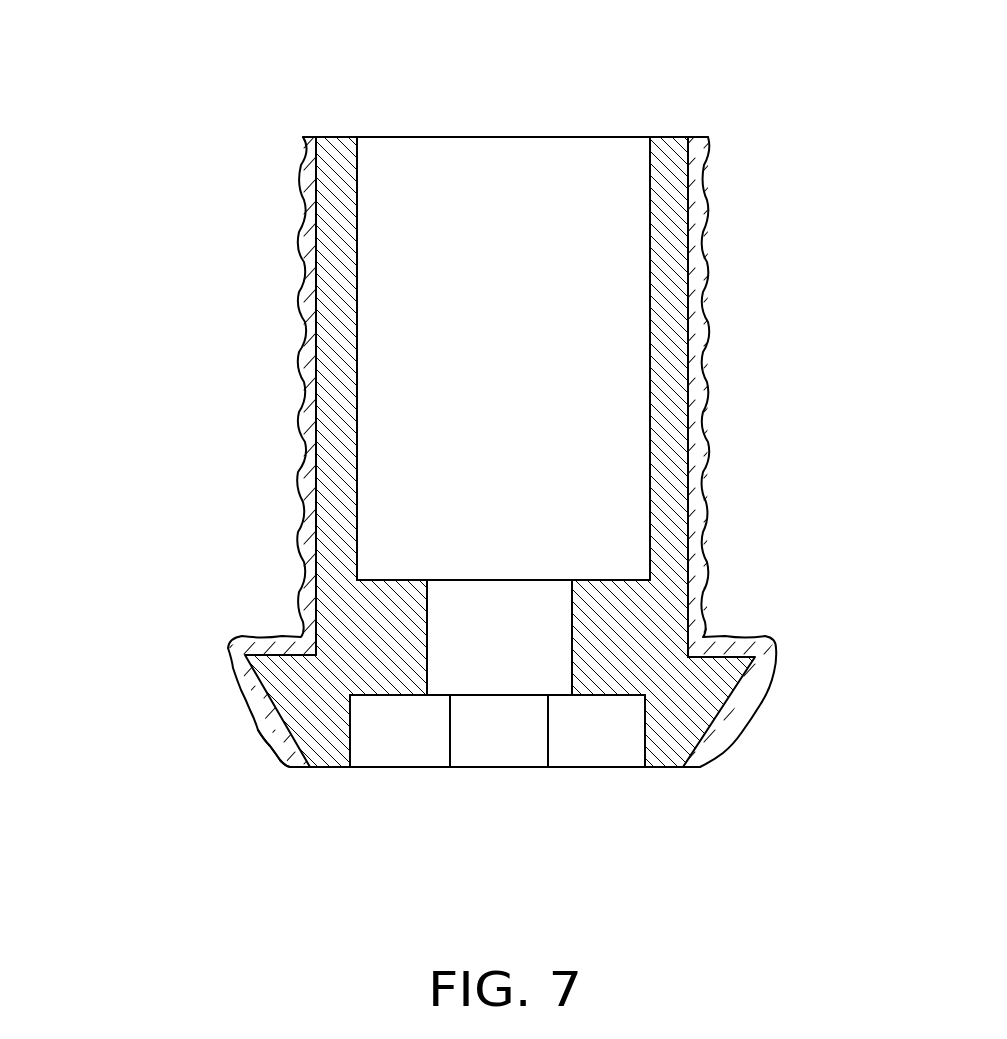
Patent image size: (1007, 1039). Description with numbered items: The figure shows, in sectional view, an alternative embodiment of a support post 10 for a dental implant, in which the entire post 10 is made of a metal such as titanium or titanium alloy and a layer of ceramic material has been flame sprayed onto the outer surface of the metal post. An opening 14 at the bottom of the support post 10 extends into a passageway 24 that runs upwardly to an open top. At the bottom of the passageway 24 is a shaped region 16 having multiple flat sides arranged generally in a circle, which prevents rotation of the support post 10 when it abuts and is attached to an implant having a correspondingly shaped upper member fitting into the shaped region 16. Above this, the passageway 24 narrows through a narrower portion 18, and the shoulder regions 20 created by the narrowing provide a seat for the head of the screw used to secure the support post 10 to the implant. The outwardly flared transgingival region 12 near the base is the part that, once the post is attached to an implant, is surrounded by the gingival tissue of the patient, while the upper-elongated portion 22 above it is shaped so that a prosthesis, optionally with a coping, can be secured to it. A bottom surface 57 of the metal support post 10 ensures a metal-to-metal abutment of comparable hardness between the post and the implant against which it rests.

The support post 10 is at (698, 78).
The transgingival region 12 is at (720, 720).
The opening 14 is at (378, 770).
The shaped region 16 is at (605, 737).
The narrower portion 18 is at (485, 558).
The shoulder regions 20 is at (612, 583).
The upper-elongated portion 22 is at (688, 350).
The passageway 24 is at (500, 200).
The bottom surface 57 is at (332, 772).